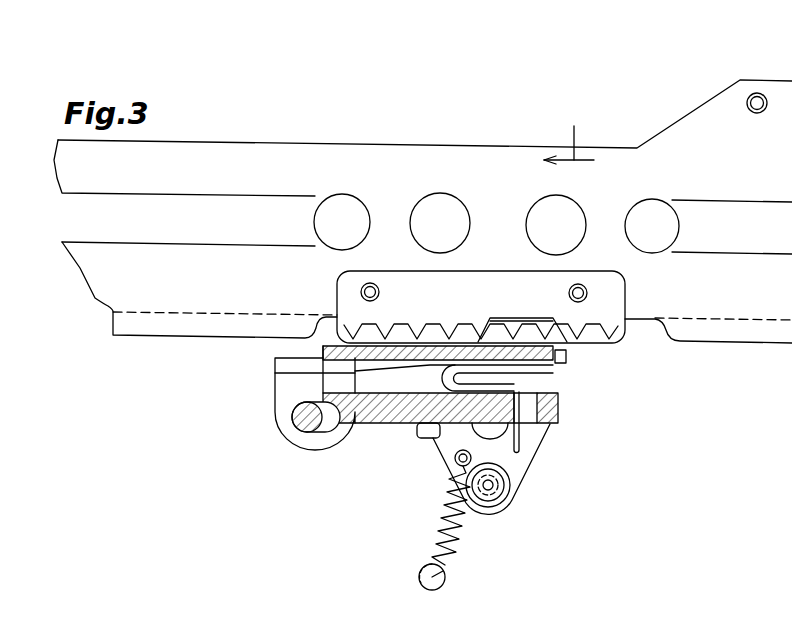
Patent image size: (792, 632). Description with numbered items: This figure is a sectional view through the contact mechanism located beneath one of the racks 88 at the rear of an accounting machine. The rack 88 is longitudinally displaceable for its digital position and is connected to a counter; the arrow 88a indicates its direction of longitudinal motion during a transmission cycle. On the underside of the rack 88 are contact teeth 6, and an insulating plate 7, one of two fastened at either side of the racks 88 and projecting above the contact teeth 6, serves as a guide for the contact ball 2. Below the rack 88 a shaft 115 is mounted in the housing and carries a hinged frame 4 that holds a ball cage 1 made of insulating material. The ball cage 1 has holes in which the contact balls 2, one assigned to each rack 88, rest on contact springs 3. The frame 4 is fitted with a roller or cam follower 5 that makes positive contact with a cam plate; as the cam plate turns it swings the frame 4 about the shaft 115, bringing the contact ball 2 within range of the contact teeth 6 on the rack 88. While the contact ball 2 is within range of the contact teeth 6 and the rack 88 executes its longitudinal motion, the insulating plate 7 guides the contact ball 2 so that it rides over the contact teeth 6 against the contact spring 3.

The rack 88 is at (208, 150).
The direction of movement of bar 88a is at (569, 134).
The insulating plate 7 is at (353, 302).
The contact teeth 6 is at (522, 331).
The ball cage 1 is at (559, 365).
The contact ball 2 is at (555, 379).
The contact spring 3 is at (520, 446).
The hinged frame 4 is at (518, 494).
The cam follower 5 is at (505, 487).
The shaft 115 is at (302, 432).